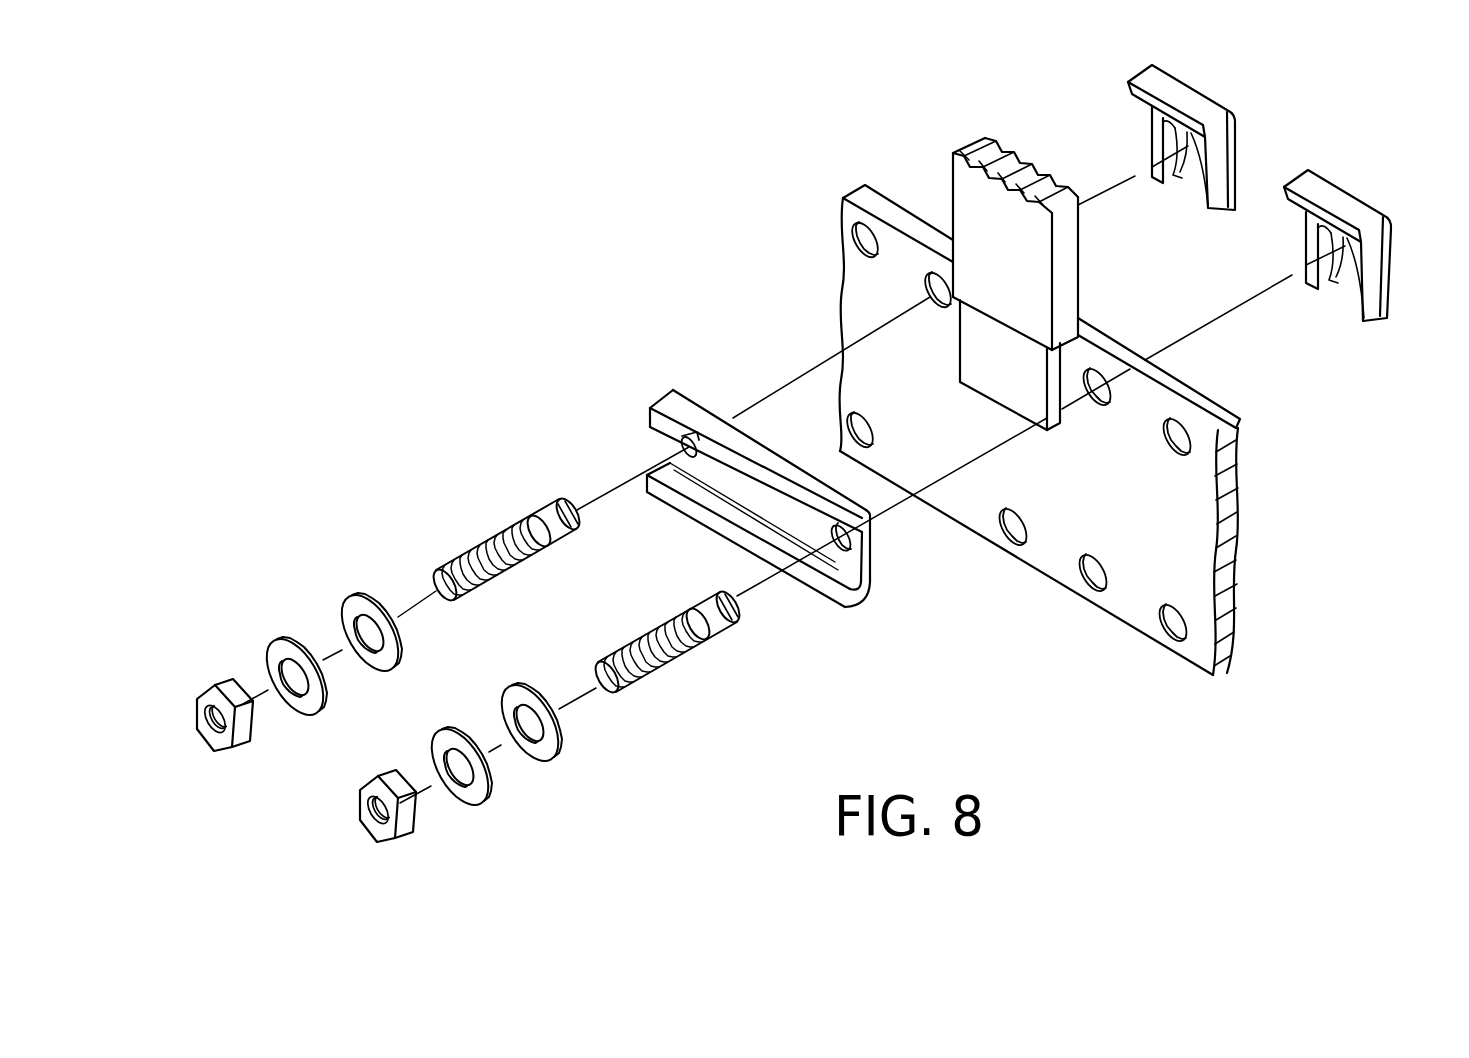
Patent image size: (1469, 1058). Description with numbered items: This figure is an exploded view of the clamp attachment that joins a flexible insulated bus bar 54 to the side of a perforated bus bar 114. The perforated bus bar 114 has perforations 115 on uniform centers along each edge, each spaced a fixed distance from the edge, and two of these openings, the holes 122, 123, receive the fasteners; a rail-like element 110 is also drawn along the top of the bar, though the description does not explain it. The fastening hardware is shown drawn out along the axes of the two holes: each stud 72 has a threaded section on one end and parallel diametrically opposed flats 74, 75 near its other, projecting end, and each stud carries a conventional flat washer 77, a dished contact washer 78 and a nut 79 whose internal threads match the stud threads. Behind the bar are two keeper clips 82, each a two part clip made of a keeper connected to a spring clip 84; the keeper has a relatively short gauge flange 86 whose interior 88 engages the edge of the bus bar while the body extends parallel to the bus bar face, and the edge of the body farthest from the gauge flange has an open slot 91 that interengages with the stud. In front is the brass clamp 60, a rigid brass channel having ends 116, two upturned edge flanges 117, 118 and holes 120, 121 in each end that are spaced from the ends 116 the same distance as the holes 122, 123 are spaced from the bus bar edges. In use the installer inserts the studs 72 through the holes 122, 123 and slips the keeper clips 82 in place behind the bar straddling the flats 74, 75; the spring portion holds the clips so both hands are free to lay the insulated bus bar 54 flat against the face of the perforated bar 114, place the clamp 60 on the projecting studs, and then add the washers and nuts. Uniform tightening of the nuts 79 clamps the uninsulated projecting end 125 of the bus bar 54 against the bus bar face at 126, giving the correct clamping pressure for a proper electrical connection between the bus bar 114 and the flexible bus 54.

The insulated bus bar 54 is at (968, 188).
The brass clamp 60 is at (744, 500).
The stud 72 is at (605, 591).
The flat 74 is at (638, 561).
The flat 75 is at (547, 503).
The flat washer 77 is at (352, 595).
The dished contact washer 78 is at (282, 640).
The nut 79 is at (217, 688).
The keeper clip 82 is at (1255, 181).
The spring clip 84 is at (1243, 133).
The gauge flange 86 is at (1298, 200).
The interior of the gauge flange 88 is at (1132, 88).
The open slot 91 is at (1197, 153).
The rail 110 is at (1115, 350).
The perforated bus bar 114 is at (1140, 514).
The perforation 115 is at (1187, 617).
The end 116 is at (873, 572).
The upturned edge flange 117 is at (768, 468).
The upturned edge flange 118 is at (713, 537).
The hole 120 is at (683, 450).
The hole 121 is at (865, 550).
The hole 122 is at (930, 292).
The hole 123 is at (1110, 398).
The uninsulated projecting end 125 is at (1000, 390).
The bus bar face 126 is at (1077, 362).